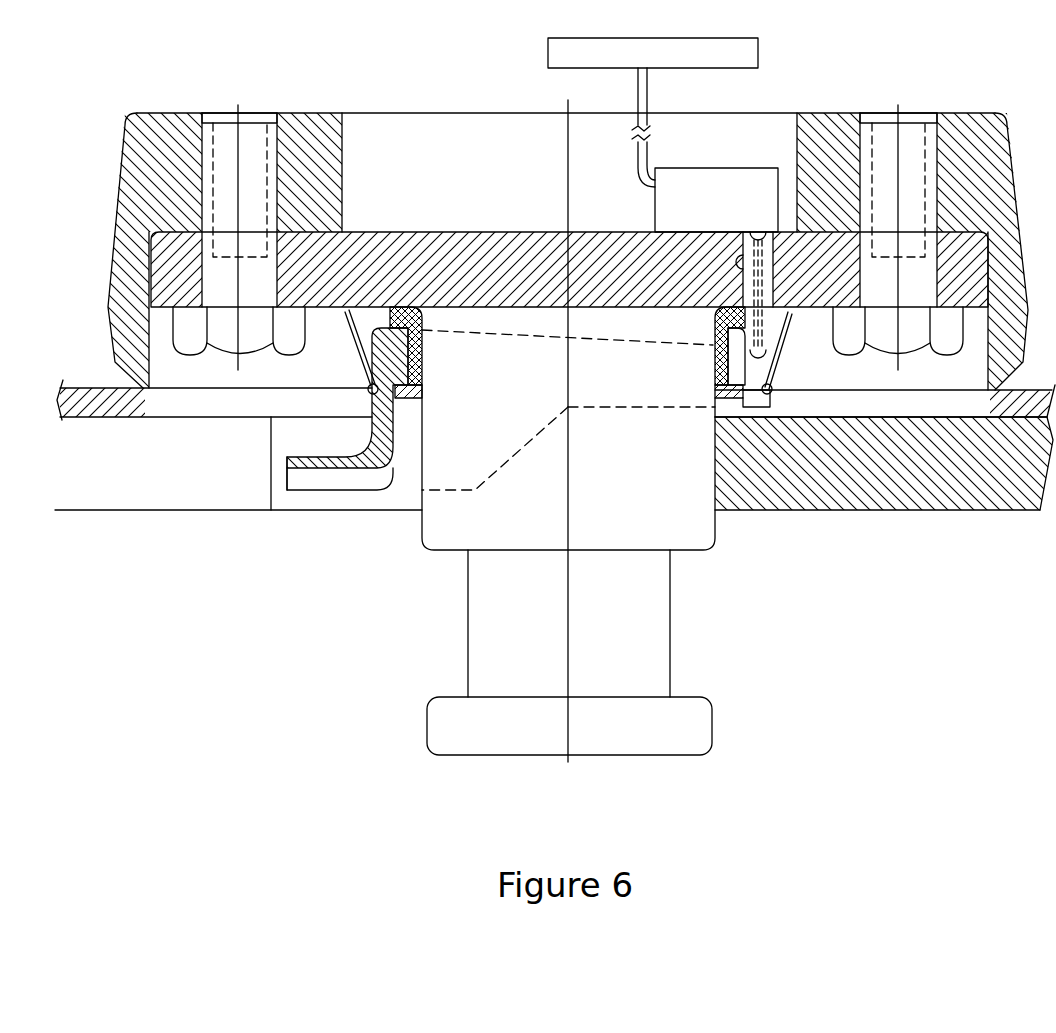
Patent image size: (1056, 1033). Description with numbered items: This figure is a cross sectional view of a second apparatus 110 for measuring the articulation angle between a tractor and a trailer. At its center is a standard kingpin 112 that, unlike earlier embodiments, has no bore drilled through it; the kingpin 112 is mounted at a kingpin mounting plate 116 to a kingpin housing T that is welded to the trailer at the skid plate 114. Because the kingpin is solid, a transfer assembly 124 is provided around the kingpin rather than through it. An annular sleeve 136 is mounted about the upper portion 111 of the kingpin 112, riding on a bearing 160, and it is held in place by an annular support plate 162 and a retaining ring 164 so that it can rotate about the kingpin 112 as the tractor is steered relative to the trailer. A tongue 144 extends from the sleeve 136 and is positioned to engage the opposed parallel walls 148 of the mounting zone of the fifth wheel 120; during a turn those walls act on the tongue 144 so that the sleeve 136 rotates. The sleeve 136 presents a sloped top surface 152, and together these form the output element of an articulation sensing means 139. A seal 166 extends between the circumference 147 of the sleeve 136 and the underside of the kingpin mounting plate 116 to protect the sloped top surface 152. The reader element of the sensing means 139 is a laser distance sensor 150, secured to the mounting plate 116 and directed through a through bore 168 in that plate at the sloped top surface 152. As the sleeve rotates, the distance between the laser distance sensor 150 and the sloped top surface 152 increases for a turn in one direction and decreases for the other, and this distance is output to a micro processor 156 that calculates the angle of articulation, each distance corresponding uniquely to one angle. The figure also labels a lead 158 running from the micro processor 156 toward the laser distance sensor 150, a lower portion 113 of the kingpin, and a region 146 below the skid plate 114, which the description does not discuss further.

The apparatus 110 is at (177, 110).
The kingpin housing T is at (328, 112).
The micro processor 156 is at (653, 53).
The cable 158 is at (643, 152).
The laser distance sensor 150 is at (668, 200).
The articulation sensing means 139 is at (752, 160).
The through bore 168 is at (748, 258).
The kingpin mounting plate 116 is at (561, 231).
The sloped top surface 152 is at (611, 340).
The bearing 160 is at (715, 321).
The annular sleeve 136 is at (412, 491).
The tongue 144 is at (330, 478).
The opposed parallel walls 148 is at (284, 498).
The annular support plate 162 is at (743, 392).
The retaining ring 164 is at (730, 395).
The transfer assembly 124 is at (360, 495).
The seal 166 is at (778, 365).
The circumference 147 is at (771, 361).
The space 146 is at (181, 566).
The skid plate 114 is at (868, 407).
The fifth wheel 120 is at (962, 505).
The upper portion 111 is at (672, 500).
The kingpin 112 is at (702, 563).
The plunger base 113 is at (670, 650).